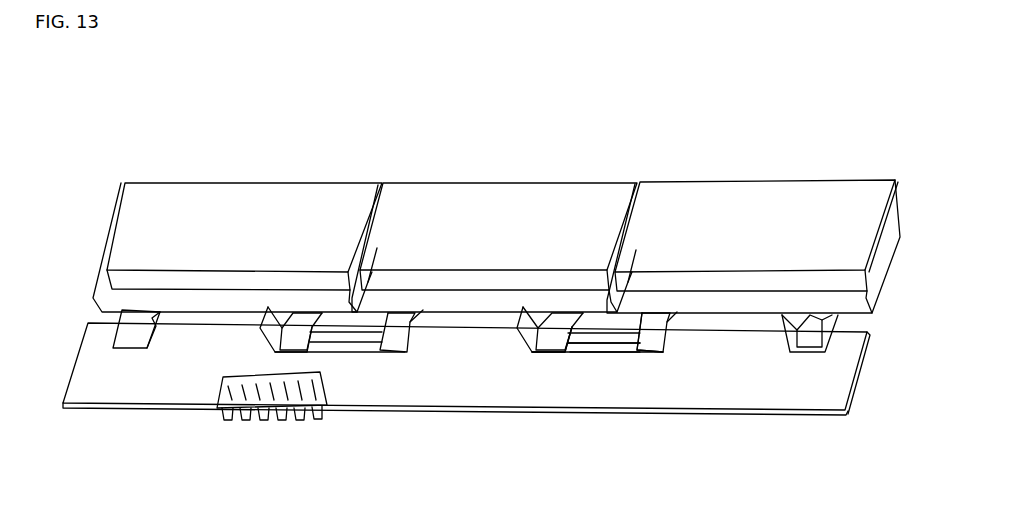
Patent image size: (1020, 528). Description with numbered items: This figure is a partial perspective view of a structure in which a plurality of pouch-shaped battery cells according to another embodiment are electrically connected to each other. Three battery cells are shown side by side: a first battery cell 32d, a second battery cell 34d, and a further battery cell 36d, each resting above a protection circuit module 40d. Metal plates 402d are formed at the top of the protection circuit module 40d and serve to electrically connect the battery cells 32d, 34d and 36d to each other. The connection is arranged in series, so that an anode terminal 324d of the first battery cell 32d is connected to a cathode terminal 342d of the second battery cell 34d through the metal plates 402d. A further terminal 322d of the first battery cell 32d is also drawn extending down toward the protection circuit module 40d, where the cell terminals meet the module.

The battery cell 36d is at (260, 207).
The second battery cell 34d is at (512, 205).
The first battery cell 32d is at (762, 212).
The protection circuit module 40d is at (171, 384).
The cathode terminal 342d is at (552, 347).
The metal plates 402d is at (605, 352).
The anode terminal 324d is at (648, 343).
The terminal tab of first battery cell 322d is at (813, 350).